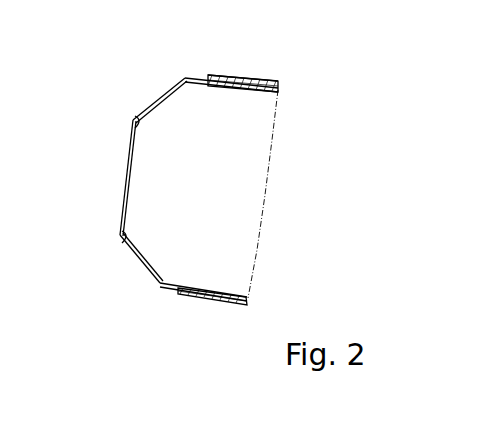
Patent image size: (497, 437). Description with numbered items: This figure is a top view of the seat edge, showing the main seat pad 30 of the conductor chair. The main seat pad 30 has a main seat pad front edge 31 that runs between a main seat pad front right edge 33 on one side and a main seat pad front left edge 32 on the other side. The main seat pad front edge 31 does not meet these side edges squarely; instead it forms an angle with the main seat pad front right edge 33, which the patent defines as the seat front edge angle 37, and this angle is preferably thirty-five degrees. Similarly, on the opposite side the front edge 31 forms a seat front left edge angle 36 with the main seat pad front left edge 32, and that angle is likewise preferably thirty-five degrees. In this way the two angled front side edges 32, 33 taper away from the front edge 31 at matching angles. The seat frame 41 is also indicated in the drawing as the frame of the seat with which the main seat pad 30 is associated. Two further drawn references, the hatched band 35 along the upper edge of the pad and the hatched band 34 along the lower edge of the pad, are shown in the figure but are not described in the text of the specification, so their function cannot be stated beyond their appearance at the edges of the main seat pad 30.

The main seat pad 30 is at (247, 184).
The main seat pad front edge 31 is at (127, 173).
The main seat pad front left edge 32 is at (146, 271).
The main seat pad front right edge 33 is at (143, 113).
The lower adhesive strip 34 is at (178, 288).
The upper adhesive strip 35 is at (206, 77).
The seat front left edge angle 36 is at (130, 236).
The seat front edge angle 37 is at (138, 125).
The seat frame 41 is at (233, 73).